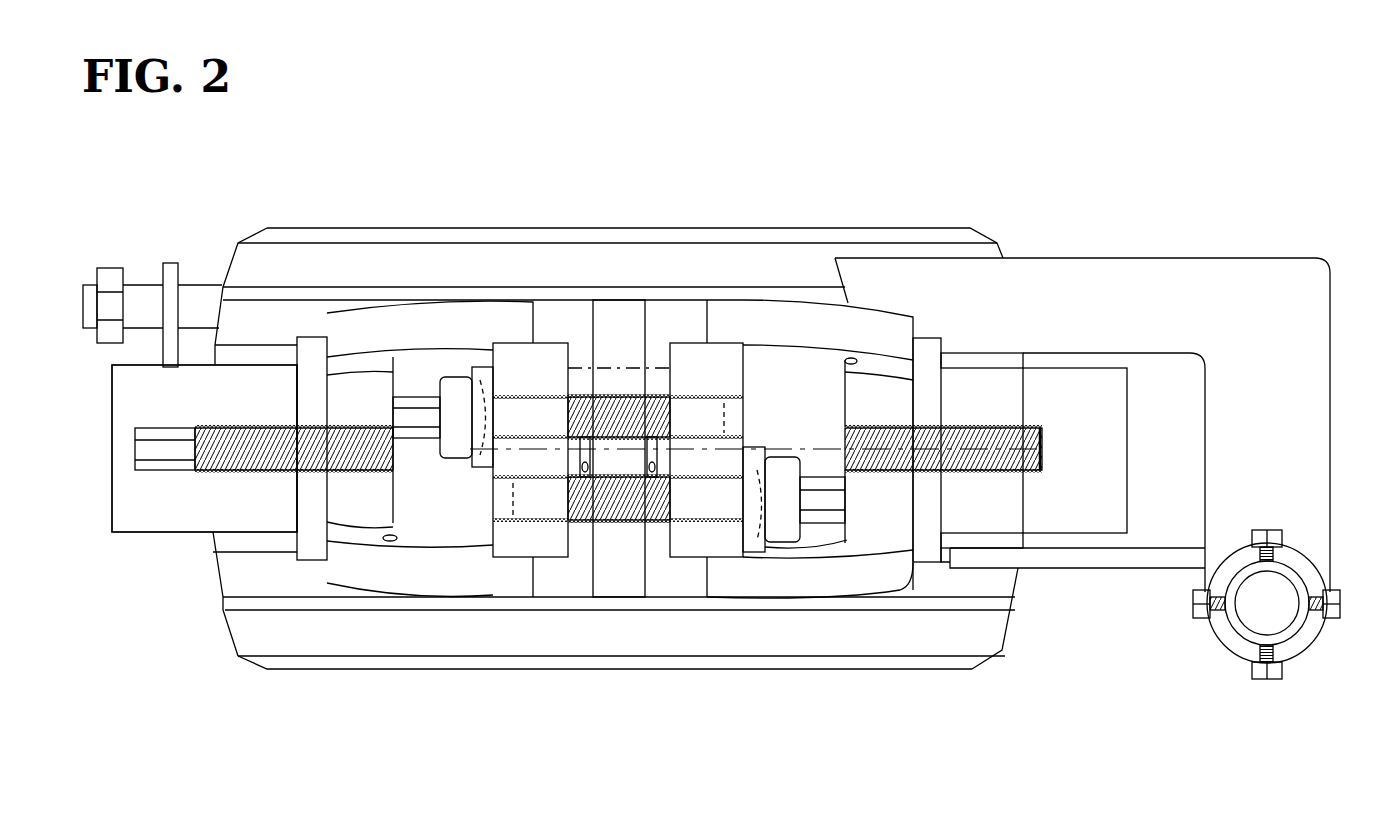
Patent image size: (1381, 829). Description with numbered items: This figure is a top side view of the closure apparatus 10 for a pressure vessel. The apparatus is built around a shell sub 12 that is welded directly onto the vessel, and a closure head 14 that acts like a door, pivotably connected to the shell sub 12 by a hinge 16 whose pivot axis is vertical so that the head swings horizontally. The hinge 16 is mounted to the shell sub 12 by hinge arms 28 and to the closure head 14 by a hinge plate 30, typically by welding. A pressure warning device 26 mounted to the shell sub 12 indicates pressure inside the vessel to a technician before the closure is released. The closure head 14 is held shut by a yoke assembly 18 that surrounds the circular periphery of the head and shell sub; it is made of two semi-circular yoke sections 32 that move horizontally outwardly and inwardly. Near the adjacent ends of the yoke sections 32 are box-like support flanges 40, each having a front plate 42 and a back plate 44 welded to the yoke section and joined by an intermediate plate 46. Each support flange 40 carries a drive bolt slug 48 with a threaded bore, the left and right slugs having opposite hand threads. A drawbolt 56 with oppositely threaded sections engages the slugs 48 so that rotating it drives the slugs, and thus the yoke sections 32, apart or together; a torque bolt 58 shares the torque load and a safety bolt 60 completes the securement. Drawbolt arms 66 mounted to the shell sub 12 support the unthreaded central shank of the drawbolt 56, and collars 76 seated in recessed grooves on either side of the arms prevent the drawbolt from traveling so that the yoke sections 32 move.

The closure apparatus 10 is at (817, 115).
The shell sub 12 is at (465, 222).
The closure head 14 is at (328, 670).
The hinge 16 is at (1320, 673).
The yoke assembly 18 is at (120, 548).
The pressure warning device 26 is at (105, 260).
The hinge arms 28 is at (1107, 280).
The hinge plate 30 is at (1127, 567).
The yoke sections 32 is at (123, 397).
The support flanges 40 is at (467, 562).
The front plate 42 is at (820, 573).
The back plate 44 is at (820, 330).
The intermediate plate 46 is at (692, 543).
The drive bolt slug 48 is at (787, 410).
The drawbolt 56 is at (178, 472).
The torque bolt 58 is at (417, 413).
The safety bolt 60 is at (827, 500).
The drawbolt arms 66 is at (628, 340).
The collars 76 is at (585, 523).